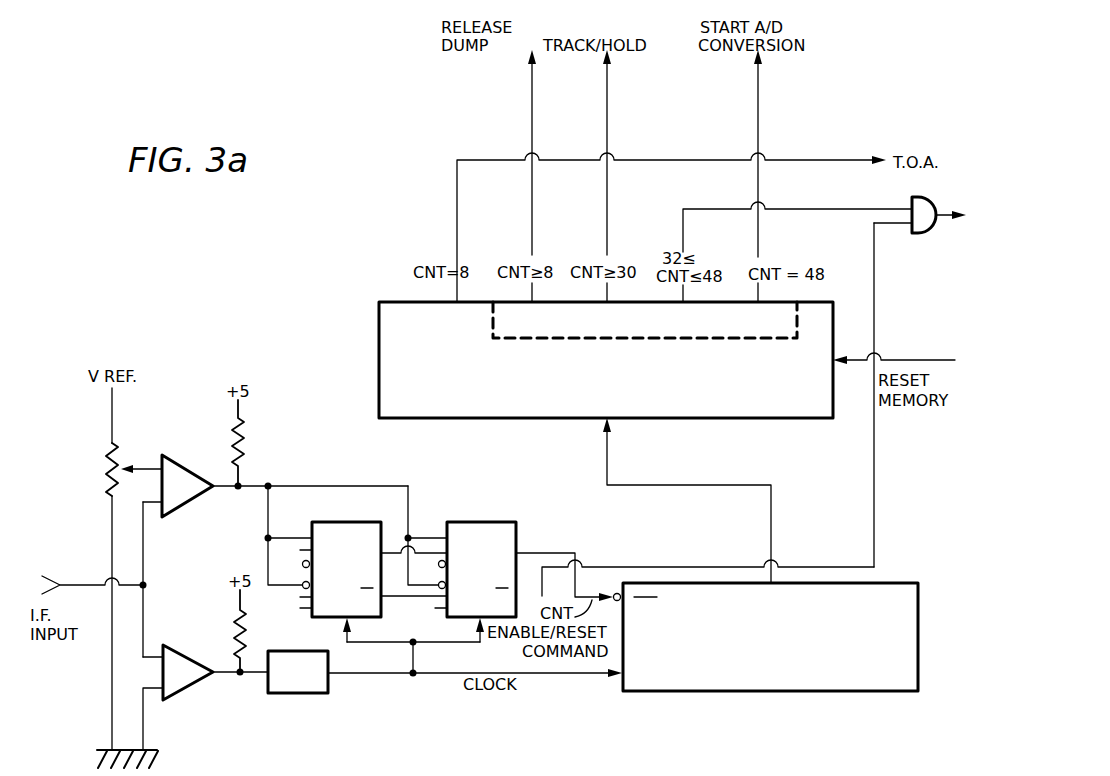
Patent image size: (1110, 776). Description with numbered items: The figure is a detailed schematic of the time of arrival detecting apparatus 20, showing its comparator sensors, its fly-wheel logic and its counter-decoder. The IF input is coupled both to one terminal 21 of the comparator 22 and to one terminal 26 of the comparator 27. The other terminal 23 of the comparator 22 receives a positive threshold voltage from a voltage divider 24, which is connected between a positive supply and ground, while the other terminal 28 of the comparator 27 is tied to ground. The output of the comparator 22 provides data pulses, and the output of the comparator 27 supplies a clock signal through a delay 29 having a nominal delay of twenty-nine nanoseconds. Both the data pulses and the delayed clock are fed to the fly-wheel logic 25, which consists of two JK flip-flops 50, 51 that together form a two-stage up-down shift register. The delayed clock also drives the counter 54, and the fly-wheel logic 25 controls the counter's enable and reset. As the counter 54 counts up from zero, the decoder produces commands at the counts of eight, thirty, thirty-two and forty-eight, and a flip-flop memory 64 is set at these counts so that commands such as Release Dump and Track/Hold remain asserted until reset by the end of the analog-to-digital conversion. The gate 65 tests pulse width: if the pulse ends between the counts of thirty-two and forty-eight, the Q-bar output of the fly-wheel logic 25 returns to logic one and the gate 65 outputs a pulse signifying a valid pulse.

The time of arrival detecting apparatus 20 is at (190, 595).
The terminal of comparator 21 is at (156, 505).
The comparator 22 is at (182, 461).
The terminal of comparator 23 is at (134, 467).
The voltage divider 24 is at (110, 456).
The fly-wheel logic 25 is at (452, 507).
The terminal of comparator 26 is at (152, 652).
The comparator 27 is at (185, 688).
The terminal of comparator 28 is at (154, 697).
The delay 29 is at (325, 694).
The JK flip-flop 50 is at (332, 520).
The JK flip-flop 51 is at (497, 521).
The counter 54 is at (763, 692).
The flip-flop memory 64 is at (817, 300).
The gate 65 is at (924, 236).